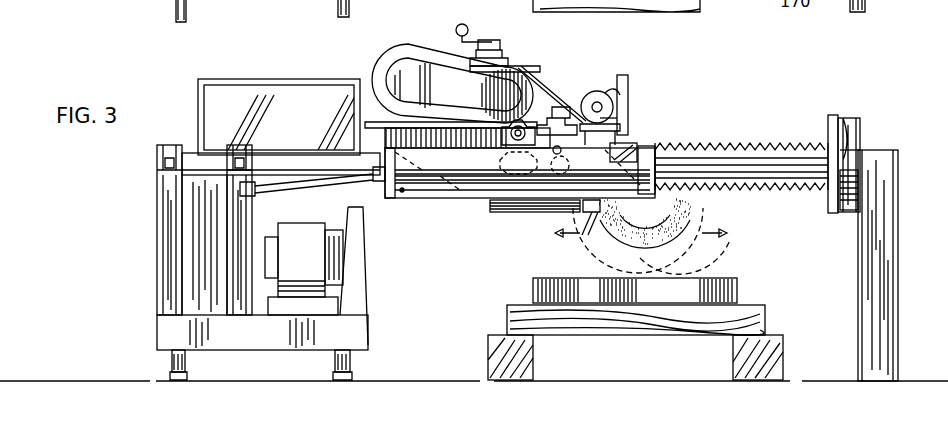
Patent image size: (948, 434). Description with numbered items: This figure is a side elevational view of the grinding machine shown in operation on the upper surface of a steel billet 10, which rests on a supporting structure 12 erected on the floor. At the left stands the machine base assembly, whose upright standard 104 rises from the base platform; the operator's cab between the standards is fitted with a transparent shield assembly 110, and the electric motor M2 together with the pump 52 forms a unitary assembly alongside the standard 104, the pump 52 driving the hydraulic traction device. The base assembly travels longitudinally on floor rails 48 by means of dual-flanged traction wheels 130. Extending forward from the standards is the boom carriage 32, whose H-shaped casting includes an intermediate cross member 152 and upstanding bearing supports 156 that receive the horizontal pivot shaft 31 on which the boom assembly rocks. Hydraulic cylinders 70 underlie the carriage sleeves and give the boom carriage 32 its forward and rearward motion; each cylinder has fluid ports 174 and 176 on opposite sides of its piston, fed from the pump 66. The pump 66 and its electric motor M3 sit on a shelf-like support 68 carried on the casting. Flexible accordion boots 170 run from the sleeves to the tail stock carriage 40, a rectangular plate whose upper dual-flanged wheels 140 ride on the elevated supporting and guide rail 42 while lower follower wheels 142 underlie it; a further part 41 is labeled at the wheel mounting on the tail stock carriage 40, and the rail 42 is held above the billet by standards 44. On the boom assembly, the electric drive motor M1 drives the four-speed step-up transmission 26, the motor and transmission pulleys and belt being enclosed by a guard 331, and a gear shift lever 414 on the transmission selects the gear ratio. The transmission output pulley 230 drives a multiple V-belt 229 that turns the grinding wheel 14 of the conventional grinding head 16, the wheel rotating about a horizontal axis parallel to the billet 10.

The steel billet 10 is at (738, 290).
The supporting structure 12 is at (775, 333).
The grinding wheel 14 is at (588, 249).
The grinding head 16 is at (690, 256).
The four-speed step-up transmission 26 is at (508, 64).
The horizontal pivot shaft 31 is at (527, 127).
The boom carriage 32 is at (510, 160).
The tail stock carriage 40 is at (832, 113).
The bearing bracket 41 is at (861, 152).
The supporting and guide rail 42 is at (866, 10).
The standards 44 is at (898, 250).
The rails 48 is at (188, 17).
The pump 52 is at (352, 247).
The pump 66 is at (628, 100).
The shelf-like support 68 is at (628, 122).
The hydraulic cylinders 70 is at (446, 196).
The standard 104 is at (200, 237).
The transparent shield assembly 110 is at (270, 79).
The traction wheels 130 is at (170, 357).
The upper dual-flanged wheels 140 is at (860, 124).
The lower take-up or follower wheels 142 is at (861, 190).
The intermediate cross member 152 is at (487, 203).
The bearing supports 156 is at (648, 147).
The flexible accordion boots 170 is at (755, 142).
The fluid port 174 is at (402, 193).
The fluid port 176 is at (645, 227).
The multiple V-belt 229 is at (545, 92).
The pulley 230 is at (540, 70).
The guard or shield 331 is at (437, 68).
The gear shift lever 414 is at (487, 41).
The electric drive motor M1 is at (386, 62).
The electric motor M2 is at (320, 264).
The electric motor M3 is at (600, 90).